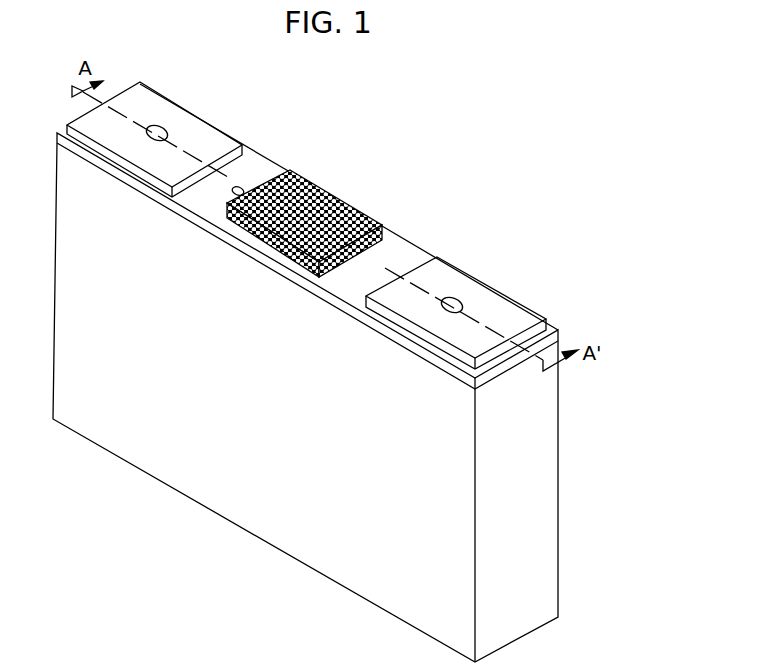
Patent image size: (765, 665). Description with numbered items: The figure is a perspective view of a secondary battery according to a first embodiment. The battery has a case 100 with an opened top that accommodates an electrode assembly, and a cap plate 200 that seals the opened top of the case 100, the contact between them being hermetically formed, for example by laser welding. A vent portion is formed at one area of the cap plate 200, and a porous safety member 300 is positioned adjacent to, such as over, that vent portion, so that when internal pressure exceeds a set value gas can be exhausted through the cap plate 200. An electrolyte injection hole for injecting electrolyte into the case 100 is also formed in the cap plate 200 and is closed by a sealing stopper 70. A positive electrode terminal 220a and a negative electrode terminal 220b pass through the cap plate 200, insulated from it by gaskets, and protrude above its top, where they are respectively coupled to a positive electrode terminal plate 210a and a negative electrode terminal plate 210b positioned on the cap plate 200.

The case 100 is at (543, 493).
The cap plate 200 is at (396, 252).
The positive electrode terminal plate 210a is at (143, 99).
The negative electrode terminal plate 210b is at (445, 272).
The positive electrode terminal 220a is at (167, 128).
The negative electrode terminal 220b is at (460, 300).
The sealing stopper 70 is at (243, 184).
The porous safety member 300 is at (338, 193).